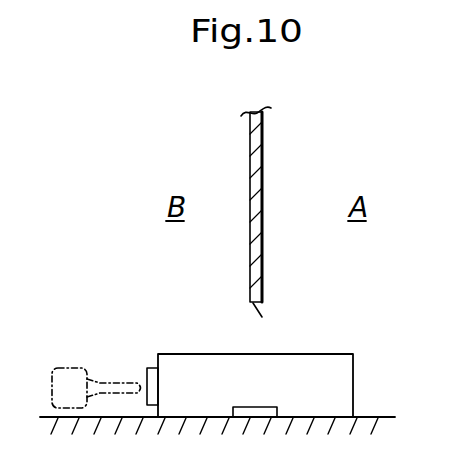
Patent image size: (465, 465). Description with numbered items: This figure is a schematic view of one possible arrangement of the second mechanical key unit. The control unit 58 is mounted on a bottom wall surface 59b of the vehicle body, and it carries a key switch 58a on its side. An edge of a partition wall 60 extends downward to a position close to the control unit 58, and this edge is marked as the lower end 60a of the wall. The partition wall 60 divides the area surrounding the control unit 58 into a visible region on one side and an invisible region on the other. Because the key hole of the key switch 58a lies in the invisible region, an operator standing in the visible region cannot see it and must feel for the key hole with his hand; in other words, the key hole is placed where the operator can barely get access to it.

The control unit 58 is at (188, 362).
The key switch 58a is at (150, 367).
The partition wall 60 is at (263, 214).
The lower end of plate 60a is at (262, 317).
The bottom wall surface 59b is at (373, 417).